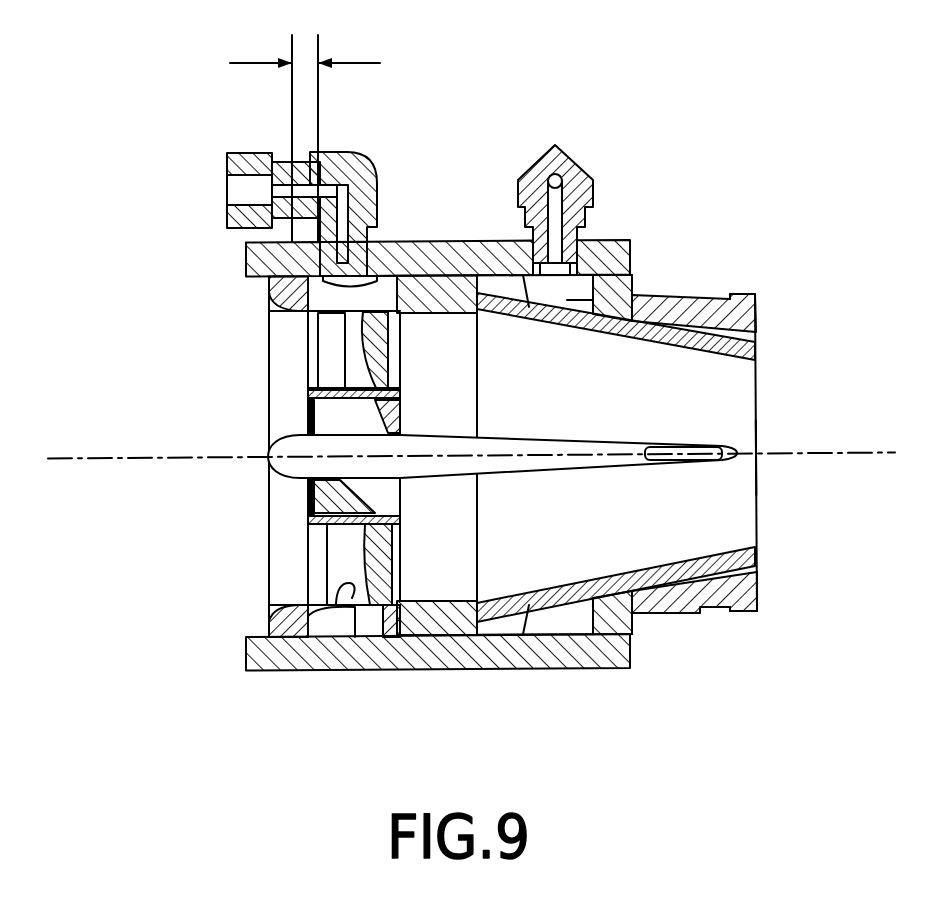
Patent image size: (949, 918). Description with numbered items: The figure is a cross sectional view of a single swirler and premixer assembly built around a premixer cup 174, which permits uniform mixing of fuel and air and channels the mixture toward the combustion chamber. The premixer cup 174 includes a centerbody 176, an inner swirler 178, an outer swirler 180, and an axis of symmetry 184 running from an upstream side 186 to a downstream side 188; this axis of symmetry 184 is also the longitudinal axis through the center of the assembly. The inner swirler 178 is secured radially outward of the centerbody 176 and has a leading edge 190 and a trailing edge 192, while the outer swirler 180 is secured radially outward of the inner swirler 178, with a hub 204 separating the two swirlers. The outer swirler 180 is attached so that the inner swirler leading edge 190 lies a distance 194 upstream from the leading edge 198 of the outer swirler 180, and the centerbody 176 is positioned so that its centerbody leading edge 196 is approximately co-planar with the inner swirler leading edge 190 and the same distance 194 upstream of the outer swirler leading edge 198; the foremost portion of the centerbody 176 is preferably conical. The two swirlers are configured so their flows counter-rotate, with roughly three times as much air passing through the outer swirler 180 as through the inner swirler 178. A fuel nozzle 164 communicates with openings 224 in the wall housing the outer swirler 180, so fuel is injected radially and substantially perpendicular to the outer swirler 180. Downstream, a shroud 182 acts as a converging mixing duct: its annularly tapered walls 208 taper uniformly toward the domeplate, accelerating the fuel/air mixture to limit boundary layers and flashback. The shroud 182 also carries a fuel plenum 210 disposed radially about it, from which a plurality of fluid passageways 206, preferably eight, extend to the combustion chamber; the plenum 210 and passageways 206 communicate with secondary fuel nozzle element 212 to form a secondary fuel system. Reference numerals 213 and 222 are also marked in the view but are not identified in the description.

The fuel nozzle 164 is at (370, 158).
The premixer cup 174 is at (262, 586).
The centerbody 176 is at (306, 481).
The inner swirler 178 is at (306, 500).
The outer swirler 180 is at (315, 338).
The shroud 182 is at (660, 296).
The axis of symmetry 184 is at (128, 458).
The upstream side 186 is at (268, 452).
The downstream side 188 is at (744, 433).
The inner swirler leading edge 190 is at (308, 387).
The inner swirler trailing edge 192 is at (400, 502).
The distance 194 is at (328, 138).
The centerbody leading edge 196 is at (308, 432).
The outer swirler leading edge 198 is at (269, 291).
The hub 204 is at (306, 518).
The fluid passageways 206 is at (758, 330).
The annularly tapered walls 208 is at (624, 330).
The fuel plenum 210 is at (594, 300).
The secondary fuel nozzle element 212 is at (572, 162).
The shoulder 213 is at (385, 282).
The needle tip 222 is at (408, 433).
The openings 224 is at (350, 607).